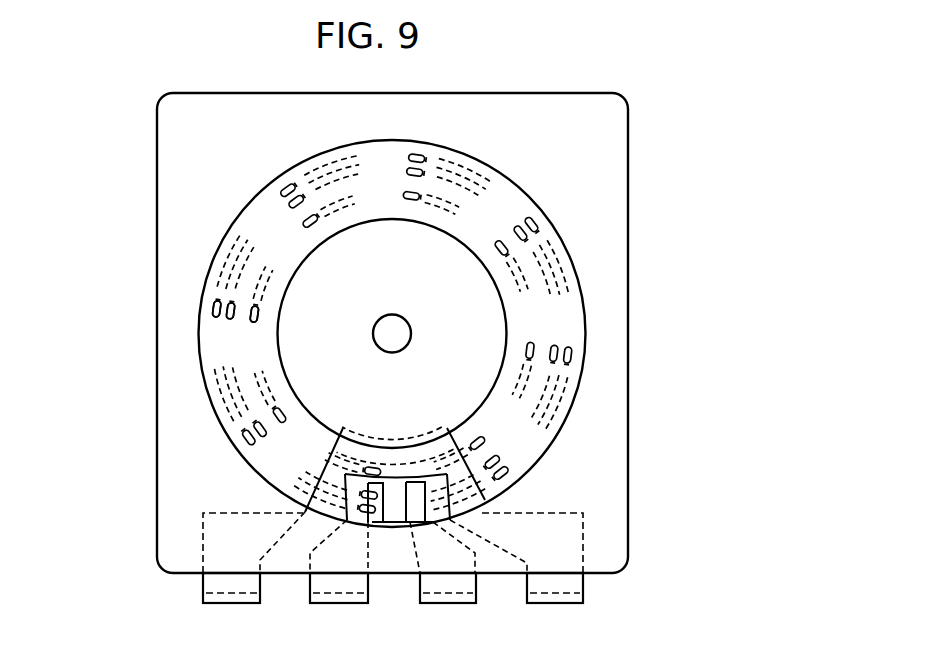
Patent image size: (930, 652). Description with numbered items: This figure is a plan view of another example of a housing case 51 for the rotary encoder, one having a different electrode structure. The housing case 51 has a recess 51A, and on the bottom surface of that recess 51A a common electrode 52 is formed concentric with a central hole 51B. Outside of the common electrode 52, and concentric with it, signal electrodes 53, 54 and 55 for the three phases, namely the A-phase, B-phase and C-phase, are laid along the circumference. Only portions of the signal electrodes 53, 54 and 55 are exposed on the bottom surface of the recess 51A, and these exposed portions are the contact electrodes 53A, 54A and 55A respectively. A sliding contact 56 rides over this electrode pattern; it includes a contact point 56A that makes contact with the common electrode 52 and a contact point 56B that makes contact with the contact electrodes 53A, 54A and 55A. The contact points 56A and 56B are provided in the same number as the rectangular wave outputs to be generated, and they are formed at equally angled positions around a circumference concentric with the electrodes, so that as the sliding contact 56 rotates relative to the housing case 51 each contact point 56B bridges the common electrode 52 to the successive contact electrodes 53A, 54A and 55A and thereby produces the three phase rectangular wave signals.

The housing case 51 is at (610, 138).
The recess 51A is at (535, 213).
The central hole 51B is at (376, 323).
The common electrode 52 is at (445, 427).
The signal electrode 53 is at (285, 558).
The contact electrode 53A is at (335, 506).
The signal electrode 54 is at (501, 558).
The contact electrode 54A is at (425, 517).
The signal electrode 55 is at (415, 502).
The contact electrode 55A is at (417, 510).
The sliding contact 56 is at (557, 262).
The contact point 56A is at (252, 323).
The contact point 56B is at (229, 320).